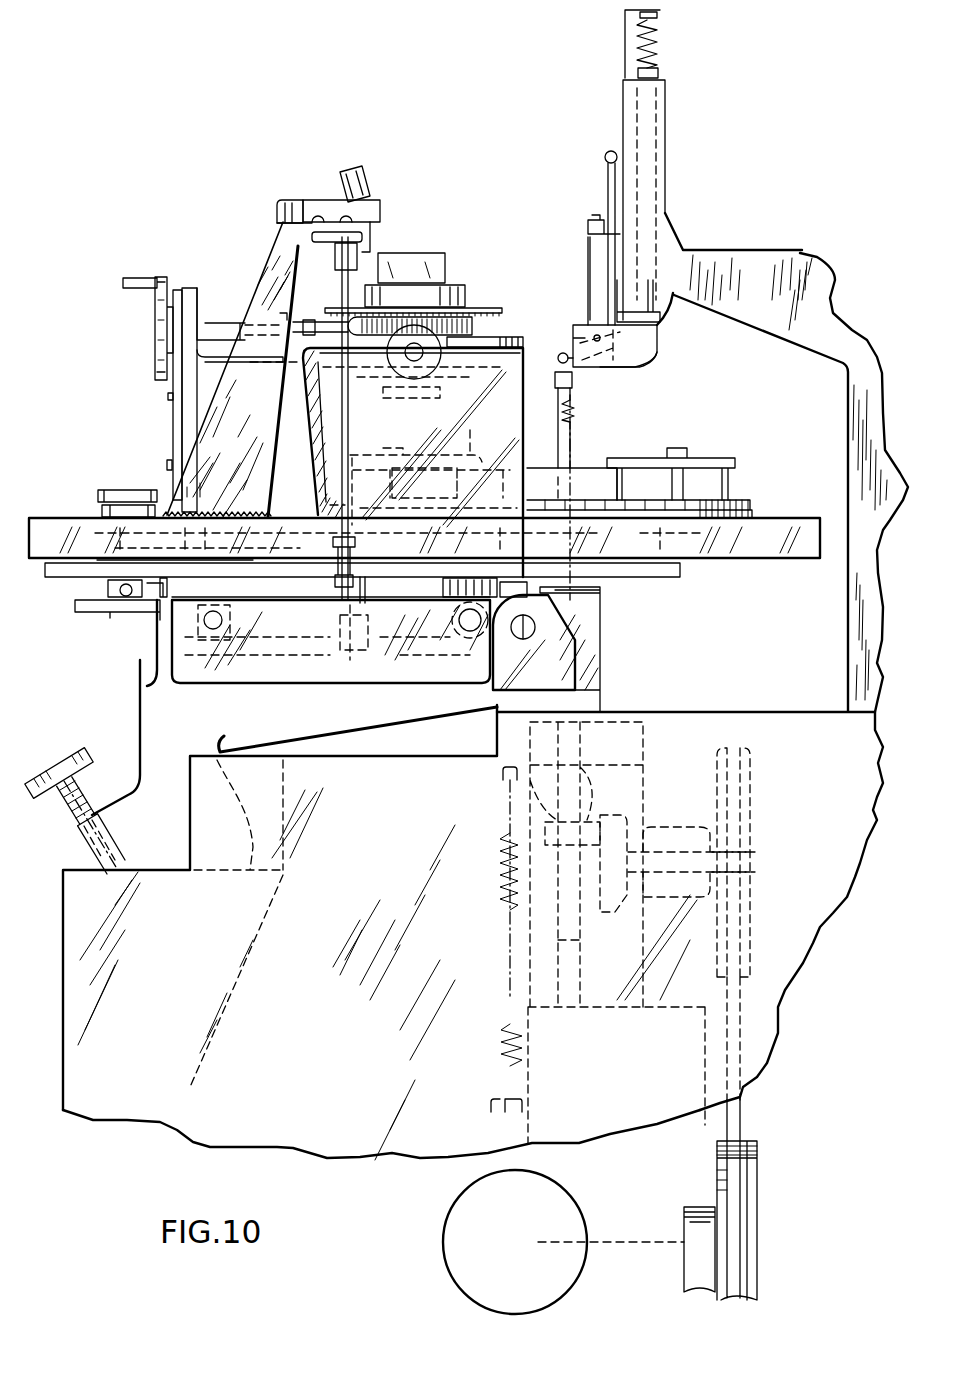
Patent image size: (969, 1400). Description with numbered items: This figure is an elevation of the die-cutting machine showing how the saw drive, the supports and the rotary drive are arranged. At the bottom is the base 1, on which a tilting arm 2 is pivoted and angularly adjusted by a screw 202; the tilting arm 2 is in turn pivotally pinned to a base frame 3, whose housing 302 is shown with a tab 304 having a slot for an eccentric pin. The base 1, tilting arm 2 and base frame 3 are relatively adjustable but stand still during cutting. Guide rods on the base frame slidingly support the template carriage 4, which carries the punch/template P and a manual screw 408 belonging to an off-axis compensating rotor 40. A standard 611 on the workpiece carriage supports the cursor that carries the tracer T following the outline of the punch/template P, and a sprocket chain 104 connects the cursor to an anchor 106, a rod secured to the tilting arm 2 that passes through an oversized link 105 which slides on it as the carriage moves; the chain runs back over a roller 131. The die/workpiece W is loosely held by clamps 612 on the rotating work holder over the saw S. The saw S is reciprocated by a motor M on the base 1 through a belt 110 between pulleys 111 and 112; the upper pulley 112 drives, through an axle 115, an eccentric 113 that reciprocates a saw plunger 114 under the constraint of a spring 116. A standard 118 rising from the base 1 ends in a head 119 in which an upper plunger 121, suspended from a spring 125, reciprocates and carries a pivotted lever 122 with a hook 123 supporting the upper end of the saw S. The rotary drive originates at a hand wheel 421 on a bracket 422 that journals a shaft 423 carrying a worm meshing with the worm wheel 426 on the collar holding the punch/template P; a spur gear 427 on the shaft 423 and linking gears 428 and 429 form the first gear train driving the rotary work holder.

The base 1 is at (342, 1047).
The tilting arm 2 is at (131, 712).
The base frame 3 is at (348, 645).
The template carriage 4 is at (724, 564).
The off-axis compensating rotor 40 is at (93, 508).
The sprocket chain 104 is at (350, 416).
The oversized link 105 is at (350, 677).
The anchor 106 is at (388, 678).
The belt 110 is at (736, 1214).
The pulley 111 is at (759, 1180).
The upper pulley 112 is at (753, 817).
The eccentric 113 is at (622, 817).
The saw plunger 114 is at (582, 744).
The axle 115 is at (667, 847).
The spring 116 is at (500, 862).
The standard 118 is at (797, 258).
The head 119 is at (667, 142).
The upper plunger 121 is at (660, 73).
The pivotted lever 122 is at (617, 366).
The hook 123 is at (559, 352).
The spring 125 is at (655, 45).
The roller 131 is at (197, 660).
The screw 202 is at (60, 762).
The housing 302 is at (300, 677).
The tab 304 is at (75, 607).
The manual screw 408 is at (147, 476).
The hand wheel 421 is at (156, 277).
The bracket 422 is at (197, 292).
The shaft 423 is at (217, 323).
The worm wheel 426 is at (473, 325).
The spur gear 427 is at (179, 288).
The linking gear 428 is at (172, 410).
The linking gear 429 is at (170, 443).
The standard 611 is at (258, 436).
The clamp 612 is at (708, 458).
The motor M is at (563, 1242).
The punch/template P is at (412, 262).
The saw S is at (574, 413).
The tracer T is at (378, 247).
The die/workpiece W is at (590, 476).